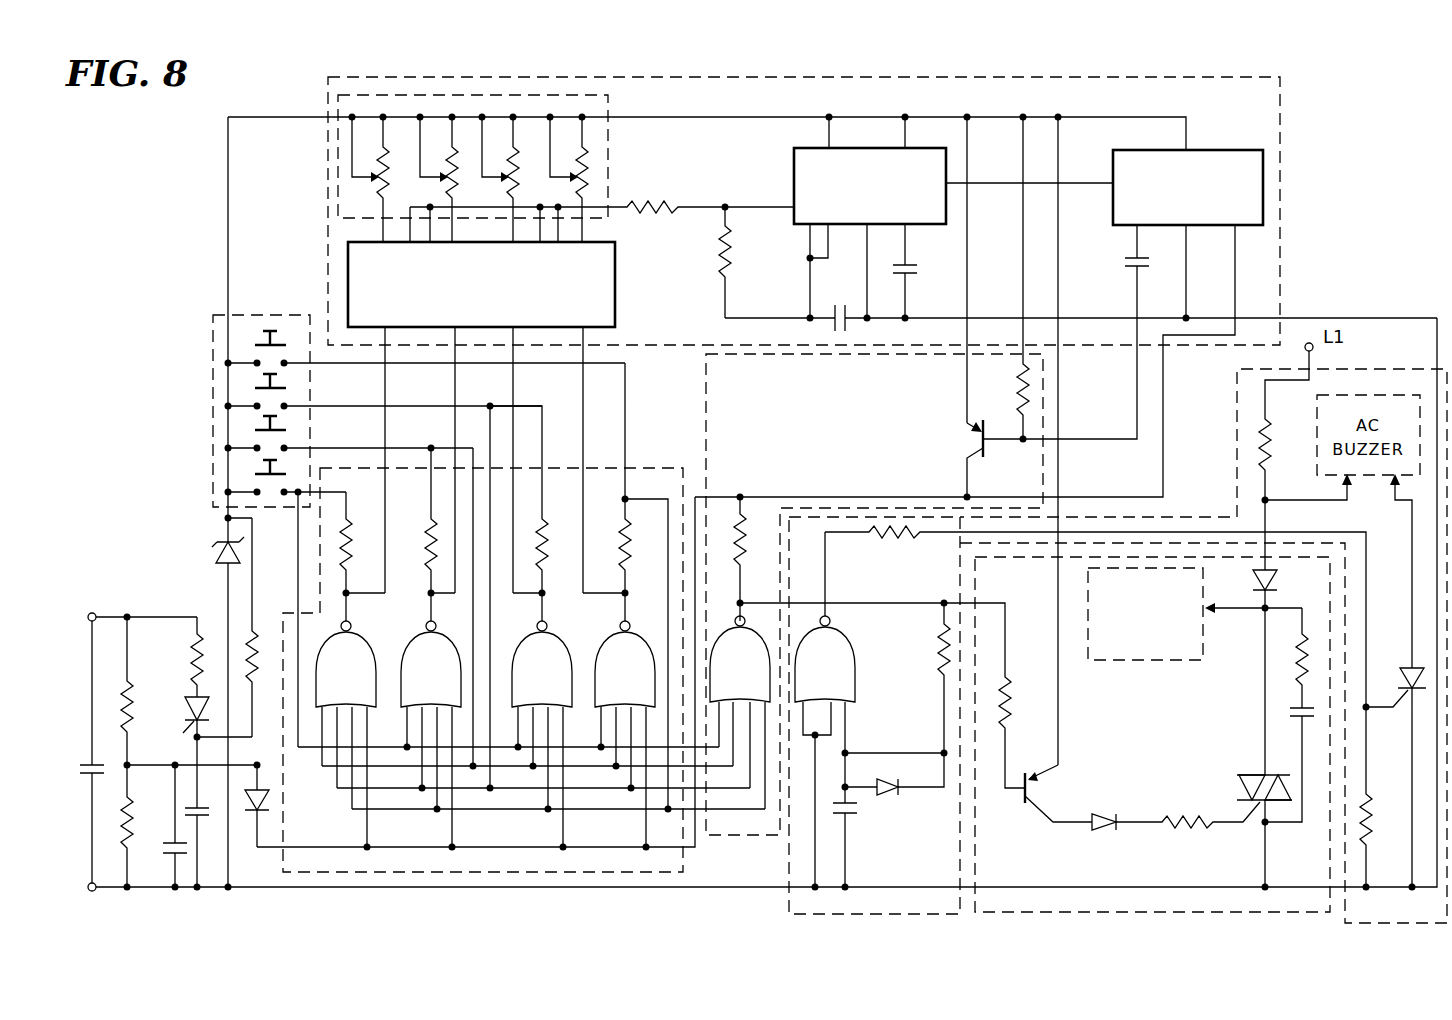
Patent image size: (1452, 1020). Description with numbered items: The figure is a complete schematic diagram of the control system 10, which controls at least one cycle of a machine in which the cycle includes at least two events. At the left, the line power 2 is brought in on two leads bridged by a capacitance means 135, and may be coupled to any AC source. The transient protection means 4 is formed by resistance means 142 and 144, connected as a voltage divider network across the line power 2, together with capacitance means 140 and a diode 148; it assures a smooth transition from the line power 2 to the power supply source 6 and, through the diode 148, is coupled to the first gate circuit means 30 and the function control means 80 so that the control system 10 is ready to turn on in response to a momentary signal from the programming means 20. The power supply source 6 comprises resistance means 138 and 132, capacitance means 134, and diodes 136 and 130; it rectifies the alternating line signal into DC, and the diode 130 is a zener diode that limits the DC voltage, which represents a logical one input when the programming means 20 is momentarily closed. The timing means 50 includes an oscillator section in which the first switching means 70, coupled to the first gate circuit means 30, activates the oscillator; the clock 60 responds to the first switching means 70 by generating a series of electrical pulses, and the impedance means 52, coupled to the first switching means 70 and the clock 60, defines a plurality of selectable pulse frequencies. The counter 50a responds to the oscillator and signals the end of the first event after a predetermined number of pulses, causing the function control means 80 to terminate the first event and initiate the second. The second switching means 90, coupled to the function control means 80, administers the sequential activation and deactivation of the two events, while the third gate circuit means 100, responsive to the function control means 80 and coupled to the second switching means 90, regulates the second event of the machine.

The line power 2 is at (86, 644).
The transient protection means 4 is at (162, 893).
The power supply source 6 is at (196, 721).
The control system 10 is at (1250, 68).
The programming means 20 is at (270, 313).
The first gate circuit means 30 is at (686, 858).
The timing means 50 is at (1009, 291).
The counter 50a is at (1235, 150).
The impedance means 52 is at (612, 168).
The clock 60 is at (794, 166).
The first switching means 70 is at (617, 302).
The function control means 80 is at (706, 428).
The second switching means 90 is at (975, 860).
The third gate circuit means 100 is at (789, 913).
The zener diode 130 is at (225, 550).
The resistance means 132 is at (252, 650).
The capacitance means 134 is at (205, 822).
The capacitance means 135 is at (88, 765).
The diode 136 is at (194, 722).
The resistance means 138 is at (197, 666).
The capacitance means 140 is at (172, 853).
The resistance means 142 is at (128, 814).
The resistance means 144 is at (128, 694).
The diode 148 is at (266, 806).